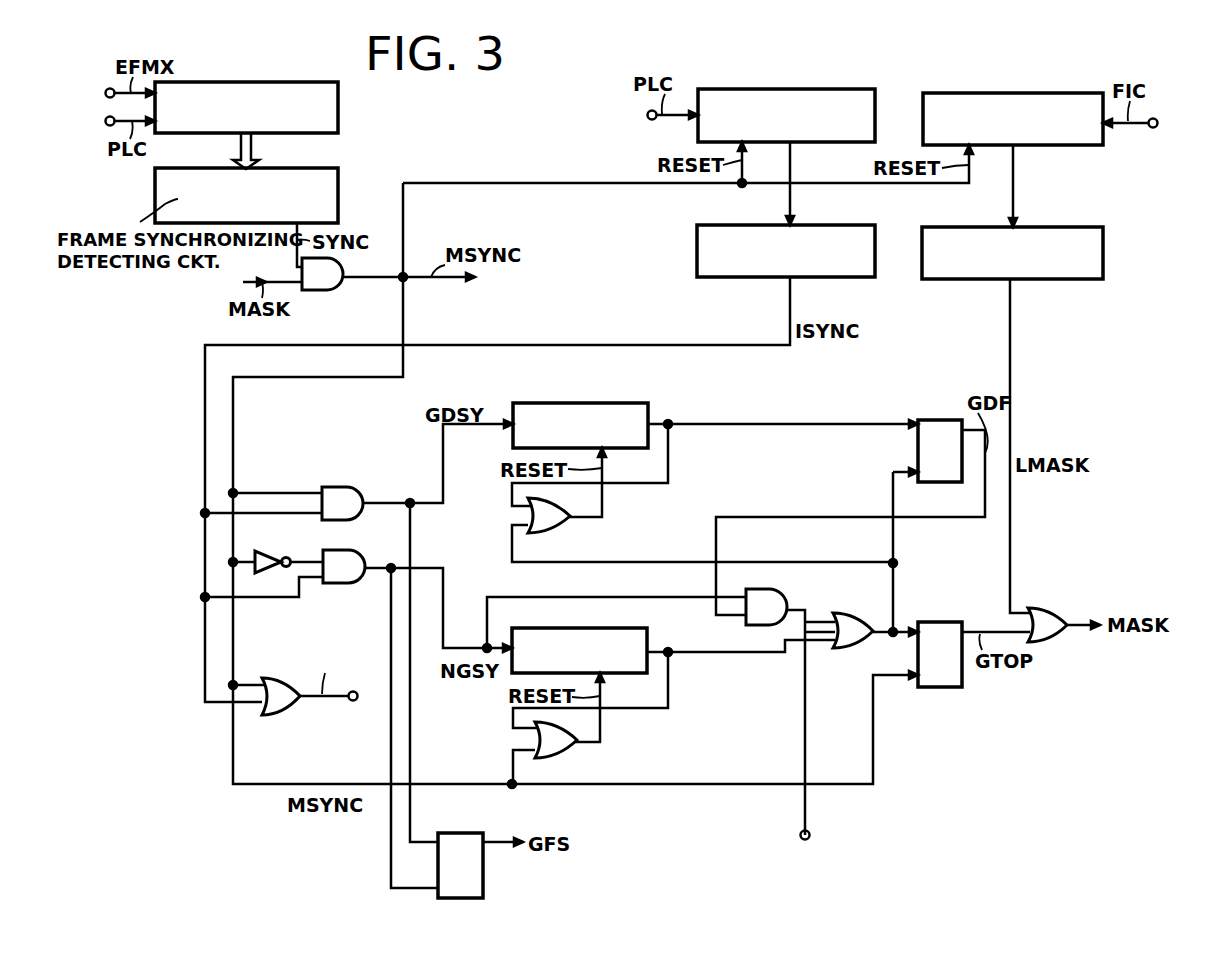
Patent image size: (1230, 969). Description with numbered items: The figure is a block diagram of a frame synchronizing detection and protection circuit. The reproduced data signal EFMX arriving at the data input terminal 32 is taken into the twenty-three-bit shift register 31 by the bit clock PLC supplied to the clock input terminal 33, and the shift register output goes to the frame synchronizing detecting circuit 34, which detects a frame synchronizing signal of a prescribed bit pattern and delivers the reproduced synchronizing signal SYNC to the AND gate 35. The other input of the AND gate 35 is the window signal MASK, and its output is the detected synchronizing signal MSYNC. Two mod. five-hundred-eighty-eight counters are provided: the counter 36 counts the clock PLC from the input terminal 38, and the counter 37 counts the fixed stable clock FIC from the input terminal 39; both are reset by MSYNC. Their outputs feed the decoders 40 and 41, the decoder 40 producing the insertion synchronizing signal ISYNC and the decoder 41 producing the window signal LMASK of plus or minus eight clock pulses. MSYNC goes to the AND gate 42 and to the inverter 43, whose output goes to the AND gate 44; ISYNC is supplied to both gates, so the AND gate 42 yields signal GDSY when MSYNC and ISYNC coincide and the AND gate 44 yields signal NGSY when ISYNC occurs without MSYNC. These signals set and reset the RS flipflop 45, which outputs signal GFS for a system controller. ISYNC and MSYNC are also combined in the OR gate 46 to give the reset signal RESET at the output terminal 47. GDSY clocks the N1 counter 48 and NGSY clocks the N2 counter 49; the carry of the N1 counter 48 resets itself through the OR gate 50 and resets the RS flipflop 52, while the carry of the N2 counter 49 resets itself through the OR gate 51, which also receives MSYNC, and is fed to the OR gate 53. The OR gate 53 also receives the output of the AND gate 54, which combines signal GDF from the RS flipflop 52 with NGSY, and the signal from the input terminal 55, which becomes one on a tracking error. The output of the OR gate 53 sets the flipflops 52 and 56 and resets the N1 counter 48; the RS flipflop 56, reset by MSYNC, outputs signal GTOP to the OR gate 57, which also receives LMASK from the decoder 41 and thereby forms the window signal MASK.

The shift register 31 is at (338, 110).
The data input terminal 32 is at (106, 93).
The clock input terminal 33 is at (106, 123).
The frame synchronizing detecting circuit 34 is at (338, 190).
The AND gate 35 is at (330, 290).
The counter 36 is at (875, 100).
The counter 37 is at (1103, 138).
The input terminal 38 is at (649, 118).
The input terminal 39 is at (1158, 122).
The decoder 40 is at (862, 277).
The decoder 41 is at (1085, 279).
The AND gate 42 is at (336, 487).
The inverter 43 is at (275, 539).
The AND gate 44 is at (341, 583).
The RS flipflop 45 is at (483, 888).
The OR gate 46 is at (276, 678).
The output terminal 47 is at (353, 701).
The N1 counter 48 is at (648, 412).
The N2 counter 49 is at (647, 634).
The OR gate 50 is at (554, 531).
The OR gate 51 is at (560, 757).
The RS flipflop 52 is at (931, 420).
The OR gate 53 is at (848, 648).
The AND gate 54 is at (776, 589).
The input terminal 55 is at (809, 833).
The RS flipflop 56 is at (931, 622).
The OR gate 57 is at (1050, 642).